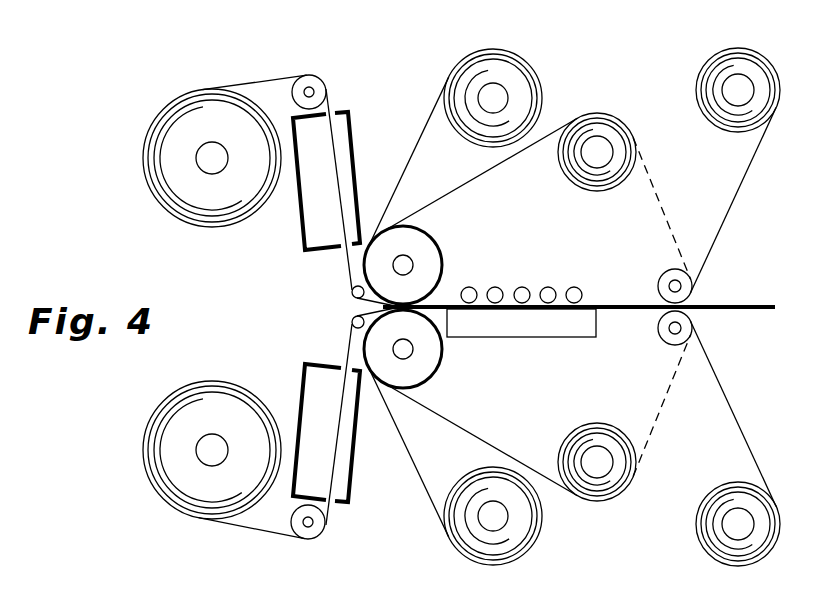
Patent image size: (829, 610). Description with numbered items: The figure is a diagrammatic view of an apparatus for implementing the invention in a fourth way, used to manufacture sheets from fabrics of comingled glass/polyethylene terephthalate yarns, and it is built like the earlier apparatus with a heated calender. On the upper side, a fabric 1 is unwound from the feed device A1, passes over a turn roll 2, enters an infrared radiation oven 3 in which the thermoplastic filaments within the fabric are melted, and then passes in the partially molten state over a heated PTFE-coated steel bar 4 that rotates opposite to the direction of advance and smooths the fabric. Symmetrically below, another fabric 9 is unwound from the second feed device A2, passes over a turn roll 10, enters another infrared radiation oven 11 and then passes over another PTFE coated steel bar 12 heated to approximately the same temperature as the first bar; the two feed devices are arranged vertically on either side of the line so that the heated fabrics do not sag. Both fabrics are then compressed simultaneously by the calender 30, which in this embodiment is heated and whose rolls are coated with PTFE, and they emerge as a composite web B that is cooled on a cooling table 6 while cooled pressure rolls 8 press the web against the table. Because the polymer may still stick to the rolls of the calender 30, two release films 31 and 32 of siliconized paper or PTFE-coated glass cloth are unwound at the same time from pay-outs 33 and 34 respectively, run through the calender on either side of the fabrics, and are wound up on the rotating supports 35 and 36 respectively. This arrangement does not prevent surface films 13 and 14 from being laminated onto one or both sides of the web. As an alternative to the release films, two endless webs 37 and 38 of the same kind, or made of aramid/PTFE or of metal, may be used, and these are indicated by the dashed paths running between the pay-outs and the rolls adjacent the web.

The feed device A1 is at (185, 128).
The second feed device A2 is at (185, 487).
The fabric 1 is at (243, 84).
The turn roll 2 is at (318, 77).
The infrared radiation oven 3 is at (350, 130).
The PTFE-coated steel bar 4 is at (352, 296).
The cooling table 6 is at (537, 328).
The cooled pressure rolls 8 is at (527, 288).
The fabric 9 is at (238, 526).
The turn roll 10 is at (317, 540).
The infrared radiation oven 11 is at (350, 488).
The PTFE coated steel bar 12 is at (352, 318).
The surface film 13 is at (434, 104).
The surface film 14 is at (430, 505).
The calender 30 is at (430, 258).
The release film 31 is at (470, 181).
The release film 32 is at (468, 433).
The pay-out 33 is at (607, 135).
The pay-out 34 is at (607, 480).
The rotating support 35 is at (715, 78).
The rotating support 36 is at (715, 536).
The endless web 37 is at (658, 178).
The endless web 38 is at (658, 436).
The composite web B is at (740, 326).